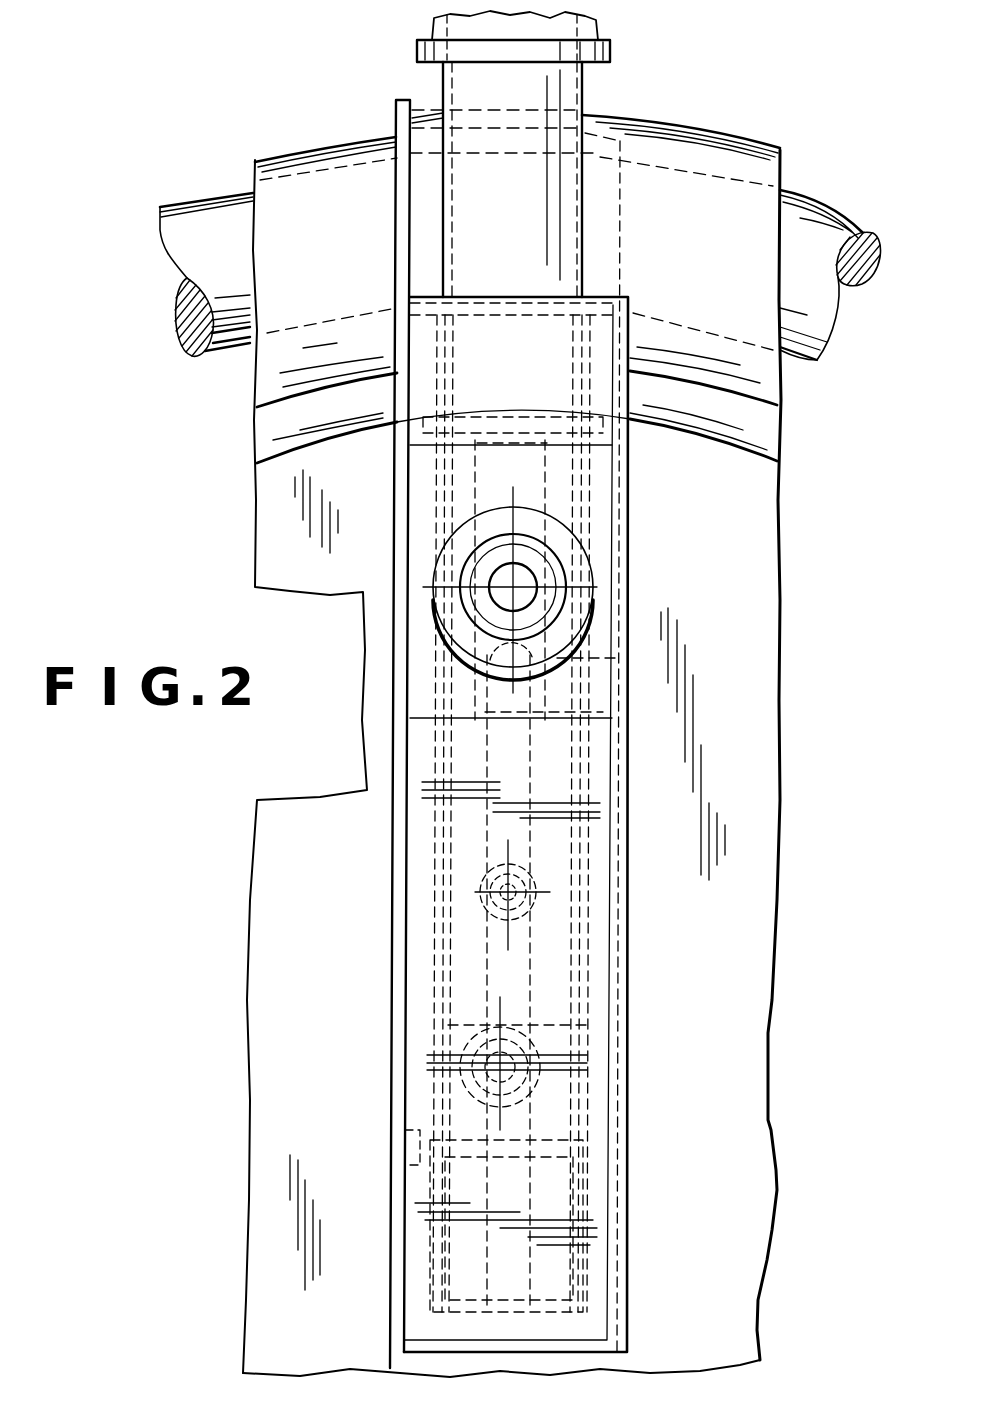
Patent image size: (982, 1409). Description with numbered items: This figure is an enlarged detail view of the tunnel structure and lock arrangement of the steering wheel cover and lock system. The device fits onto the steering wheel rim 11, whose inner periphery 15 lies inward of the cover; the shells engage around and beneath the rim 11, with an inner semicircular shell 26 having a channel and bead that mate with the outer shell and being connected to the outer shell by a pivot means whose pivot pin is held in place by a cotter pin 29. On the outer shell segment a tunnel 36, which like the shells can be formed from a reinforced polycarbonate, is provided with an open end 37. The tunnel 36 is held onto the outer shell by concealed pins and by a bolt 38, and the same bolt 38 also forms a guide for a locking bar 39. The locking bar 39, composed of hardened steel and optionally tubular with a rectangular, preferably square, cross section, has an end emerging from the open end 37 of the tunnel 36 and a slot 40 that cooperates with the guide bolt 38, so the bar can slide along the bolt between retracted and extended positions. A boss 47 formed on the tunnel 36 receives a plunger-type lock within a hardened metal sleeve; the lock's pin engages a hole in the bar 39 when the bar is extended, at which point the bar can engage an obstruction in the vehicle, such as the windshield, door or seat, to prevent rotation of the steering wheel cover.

The rim 11 is at (188, 226).
The inner periphery 15 is at (232, 352).
The inner semicircular shell 26 is at (316, 1010).
The cotter pin 29 is at (450, 1097).
The tunnel 36 is at (600, 959).
The open end 37 is at (620, 318).
The bolt 38 is at (485, 905).
The locking bar 39 is at (588, 80).
The slot 40 is at (483, 772).
The boss 47 is at (557, 538).